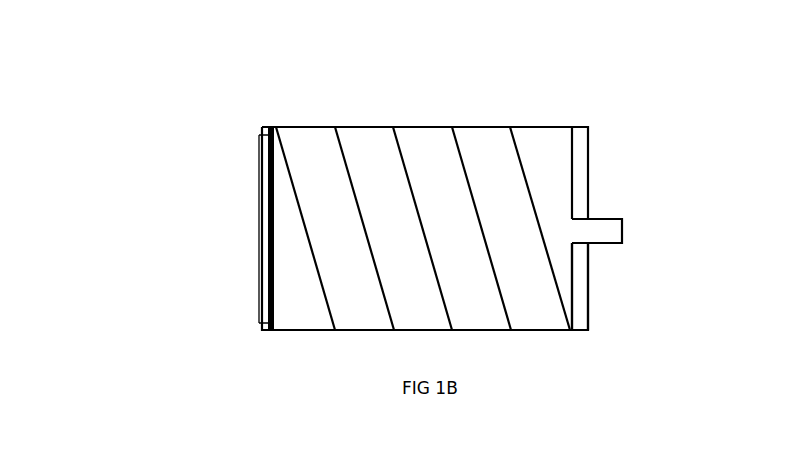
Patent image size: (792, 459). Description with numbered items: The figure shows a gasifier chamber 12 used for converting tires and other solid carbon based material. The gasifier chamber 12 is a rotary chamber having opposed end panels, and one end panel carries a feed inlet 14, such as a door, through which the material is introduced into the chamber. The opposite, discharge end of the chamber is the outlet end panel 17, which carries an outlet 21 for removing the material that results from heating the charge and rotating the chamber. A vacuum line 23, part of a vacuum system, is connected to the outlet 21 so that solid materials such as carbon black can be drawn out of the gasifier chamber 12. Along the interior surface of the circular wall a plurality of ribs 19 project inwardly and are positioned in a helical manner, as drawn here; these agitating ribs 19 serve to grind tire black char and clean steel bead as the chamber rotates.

The gasifier chamber 12 is at (210, 225).
The feed inlet 14 is at (257, 287).
The outlet end panel 17 is at (590, 310).
The ribs 19 is at (466, 167).
The outlet 21 is at (617, 180).
The vacuum line 23 is at (612, 245).